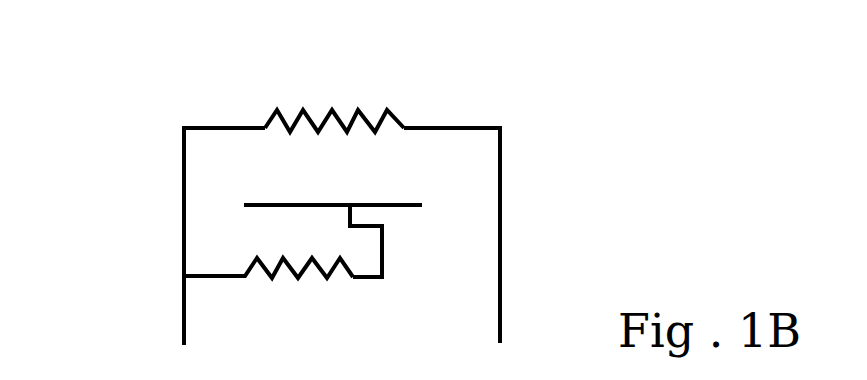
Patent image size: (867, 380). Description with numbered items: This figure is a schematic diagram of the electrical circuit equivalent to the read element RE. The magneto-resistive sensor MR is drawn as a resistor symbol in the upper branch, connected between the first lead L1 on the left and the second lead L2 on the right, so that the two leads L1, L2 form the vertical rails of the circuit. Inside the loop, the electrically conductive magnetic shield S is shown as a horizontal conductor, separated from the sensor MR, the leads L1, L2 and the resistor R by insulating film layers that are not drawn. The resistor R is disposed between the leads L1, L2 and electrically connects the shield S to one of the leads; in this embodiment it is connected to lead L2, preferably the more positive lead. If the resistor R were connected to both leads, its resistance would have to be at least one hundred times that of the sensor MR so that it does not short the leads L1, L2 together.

The read element RE is at (157, 72).
The magneto-resistive sensor MR is at (336, 110).
The shield S is at (302, 204).
The resistor R is at (287, 267).
The first lead L1 is at (182, 193).
The second lead L2 is at (502, 202).